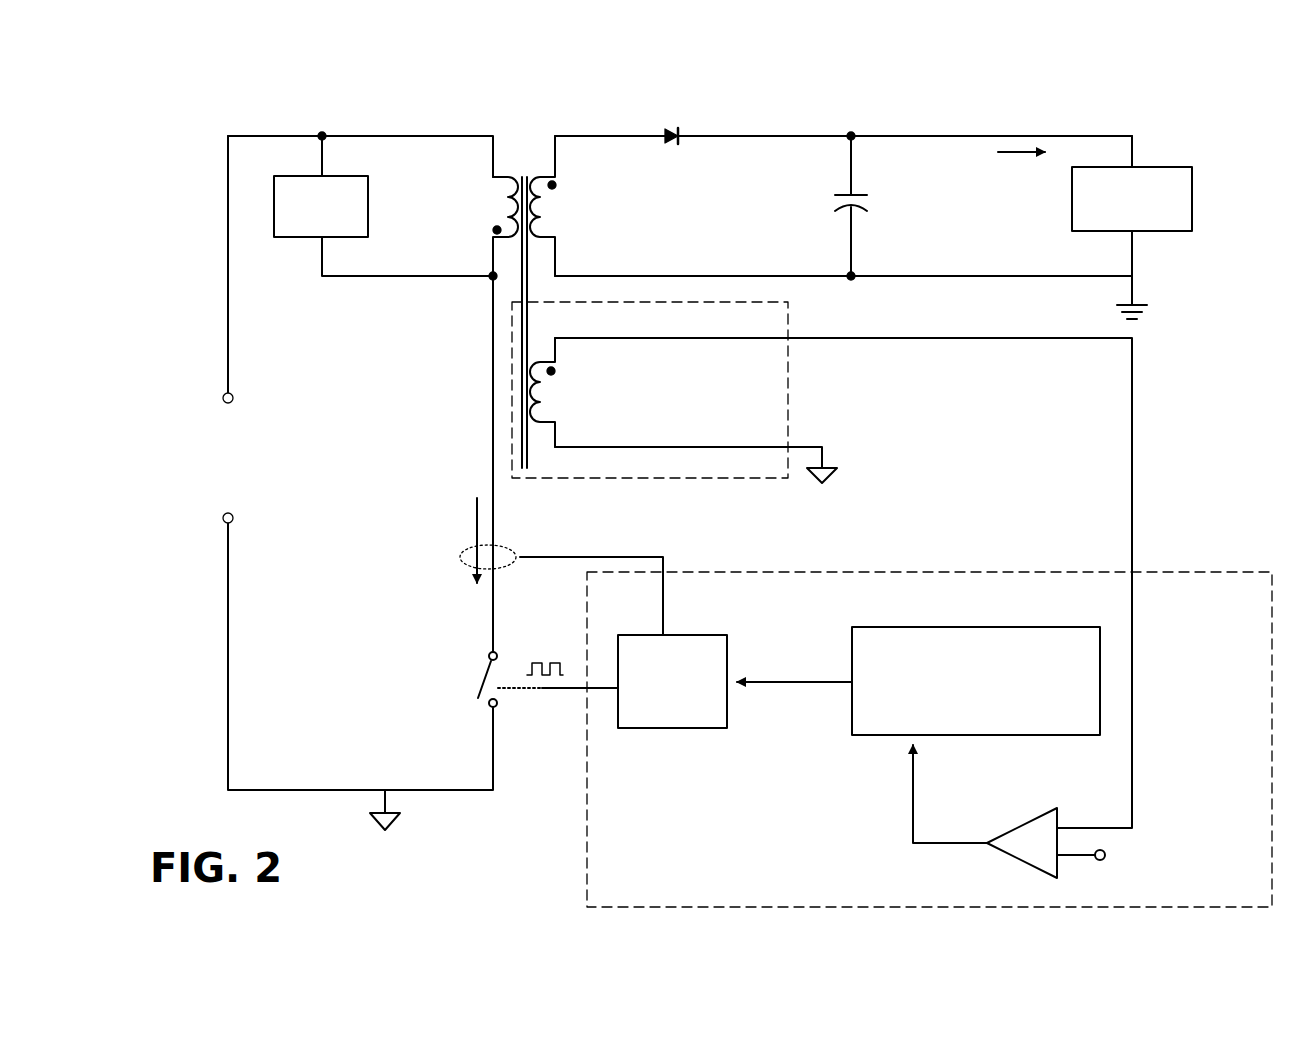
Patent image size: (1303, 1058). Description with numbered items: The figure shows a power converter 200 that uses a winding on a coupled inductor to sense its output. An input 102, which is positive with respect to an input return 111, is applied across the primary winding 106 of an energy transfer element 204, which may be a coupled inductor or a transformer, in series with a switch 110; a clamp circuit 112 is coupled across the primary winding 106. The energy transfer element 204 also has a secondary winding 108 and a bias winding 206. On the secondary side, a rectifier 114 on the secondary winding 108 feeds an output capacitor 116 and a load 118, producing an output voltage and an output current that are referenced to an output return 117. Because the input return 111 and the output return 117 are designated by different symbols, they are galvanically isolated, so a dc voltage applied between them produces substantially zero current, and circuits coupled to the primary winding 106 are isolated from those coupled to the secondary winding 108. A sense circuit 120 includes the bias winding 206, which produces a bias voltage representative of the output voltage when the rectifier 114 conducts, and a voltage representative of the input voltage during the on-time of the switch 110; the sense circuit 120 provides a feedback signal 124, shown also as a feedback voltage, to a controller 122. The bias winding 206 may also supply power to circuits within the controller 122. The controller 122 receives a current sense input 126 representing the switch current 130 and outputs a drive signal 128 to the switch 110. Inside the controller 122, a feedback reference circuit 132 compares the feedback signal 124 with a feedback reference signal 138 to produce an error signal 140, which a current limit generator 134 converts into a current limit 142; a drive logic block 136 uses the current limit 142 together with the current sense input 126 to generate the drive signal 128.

The power converter 200 is at (208, 116).
The input VIN 102 is at (202, 462).
The clamp circuit 112 is at (274, 196).
The energy transfer element T1 204 is at (525, 135).
The primary winding 106 is at (500, 215).
The secondary winding 108 is at (565, 202).
The rectifier D1 114 is at (658, 110).
The output capacitor C1 116 is at (842, 195).
The load 118 is at (1195, 196).
The output return 117 is at (1140, 322).
The sense circuit 120 is at (795, 322).
The bias winding 206 is at (618, 393).
The input return 111 is at (815, 490).
The feedback signal UFB 124 is at (1190, 462).
The controller 122 is at (905, 572).
The current sense input 126 is at (635, 518).
The switch current ID 130 is at (465, 515).
The switch S1 110 is at (440, 663).
The drive signal 128 is at (523, 750).
The drive logic block 136 is at (683, 740).
The current limit ILIM 142 is at (772, 735).
The current limit generator 134 is at (873, 740).
The feedback reference circuit 132 is at (1030, 815).
The error signal UERR 140 is at (910, 855).
The feedback reference signal UFREF 138 is at (1200, 860).